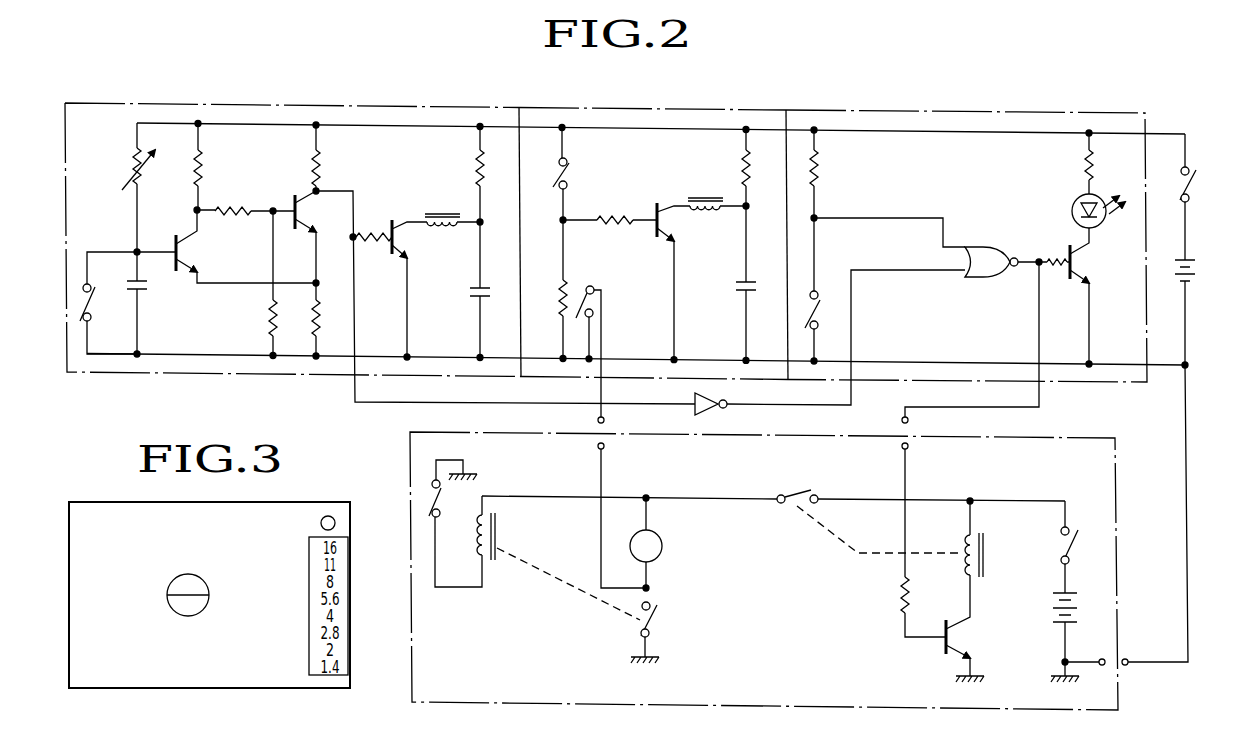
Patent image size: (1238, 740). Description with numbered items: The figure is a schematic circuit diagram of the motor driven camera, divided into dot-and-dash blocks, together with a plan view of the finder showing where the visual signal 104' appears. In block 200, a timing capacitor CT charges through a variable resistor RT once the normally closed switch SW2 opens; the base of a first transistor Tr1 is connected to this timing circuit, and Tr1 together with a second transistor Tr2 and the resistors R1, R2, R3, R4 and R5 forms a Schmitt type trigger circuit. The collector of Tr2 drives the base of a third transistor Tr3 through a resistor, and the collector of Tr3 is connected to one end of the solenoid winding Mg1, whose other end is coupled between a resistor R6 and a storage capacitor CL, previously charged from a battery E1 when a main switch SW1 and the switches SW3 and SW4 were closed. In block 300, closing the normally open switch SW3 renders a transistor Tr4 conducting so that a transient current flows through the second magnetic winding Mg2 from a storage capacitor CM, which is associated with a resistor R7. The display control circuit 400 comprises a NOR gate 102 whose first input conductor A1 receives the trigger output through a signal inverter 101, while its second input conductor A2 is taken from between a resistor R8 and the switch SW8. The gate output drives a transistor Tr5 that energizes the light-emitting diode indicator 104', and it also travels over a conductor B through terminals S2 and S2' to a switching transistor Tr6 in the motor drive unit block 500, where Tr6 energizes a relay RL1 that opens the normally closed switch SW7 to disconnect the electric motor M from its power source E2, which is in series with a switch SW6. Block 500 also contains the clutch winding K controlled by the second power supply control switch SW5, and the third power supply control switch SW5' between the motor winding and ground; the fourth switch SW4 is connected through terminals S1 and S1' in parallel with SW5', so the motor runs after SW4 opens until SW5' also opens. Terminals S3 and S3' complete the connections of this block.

In FIG. 2, the Schmitt trigger circuit block 200 is at (101, 103).
In FIG. 2, the release circuit block 300 is at (652, 110).
In FIG. 2, the indicator or display control circuit 400 is at (955, 113).
In FIG. 2, the motor drive unit block 500 is at (410, 662).
In FIG. 2, the variable resistor RT is at (143, 187).
In FIG. 2, the timing capacitor CT is at (148, 308).
In FIG. 2, the normally closed switch SW2 is at (108, 303).
In FIG. 2, the first transistor Tr1 is at (226, 246).
In FIG. 2, the resistor R1 is at (223, 153).
In FIG. 2, the resistor R2 is at (272, 312).
In FIG. 2, the resistor R3 is at (334, 307).
In FIG. 2, the resistor R4 is at (218, 196).
In FIG. 2, the resistor R5 is at (334, 153).
In FIG. 2, the resistor R6 is at (498, 153).
In FIG. 2, the resistor R7 is at (764, 153).
In FIG. 2, the resistor R8 is at (832, 153).
In FIG. 2, the second transistor Tr2 is at (304, 245).
In FIG. 2, the third transistor Tr3 is at (391, 288).
In FIG. 2, the transistor Tr4 is at (631, 281).
In FIG. 2, the transistor Tr5 is at (1093, 296).
In FIG. 2, the switching transistor Tr6 is at (965, 628).
In FIG. 2, the solenoid winding Mg1 is at (424, 188).
In FIG. 2, the second magnetic winding Mg2 is at (688, 173).
In FIG. 2, the storage capacitor CL is at (498, 280).
In FIG. 2, the storage capacitor CM is at (738, 276).
In FIG. 2, the main switch SW1 is at (1202, 197).
In FIG. 2, the normally open switch SW3 is at (575, 174).
In FIG. 2, the fourth power supply control switch SW4 is at (578, 270).
In FIG. 2, the second power supply control switch SW5 is at (453, 488).
In FIG. 2, the third power supply control switch SW5' is at (660, 632).
In FIG. 2, the switch SW6 is at (1085, 547).
In FIG. 2, the normally closed switch SW7 is at (782, 476).
In FIG. 2, the switch SW8 is at (826, 289).
In FIG. 2, the battery E1 is at (1206, 256).
In FIG. 2, the electrical power source E2 is at (1090, 590).
In FIG. 2, the first input conductor A1 is at (355, 405).
In FIG. 2, the second input conductor A2 is at (834, 210).
In FIG. 2, the conductor B is at (1039, 298).
In FIG. 2, the signal inverter 101 is at (814, 351).
In FIG. 2, the NOR gate 102 is at (998, 255).
In FIG. 2, the visual signal 104' is at (1081, 182).
In FIG. 3, the visual signal 104' is at (357, 523).
In FIG. 2, the terminal S1 is at (610, 421).
In FIG. 2, the terminal S1' is at (622, 511).
In FIG. 2, the terminal S2 is at (915, 420).
In FIG. 2, the terminal S2' is at (923, 535).
In FIG. 2, the connector terminal S3 is at (1152, 530).
In FIG. 2, the connector terminal S3' is at (1101, 677).
In FIG. 2, the magnetic winding K is at (497, 525).
In FIG. 2, the relay RL1 is at (1000, 538).
In FIG. 2, the electric motor M is at (646, 543).